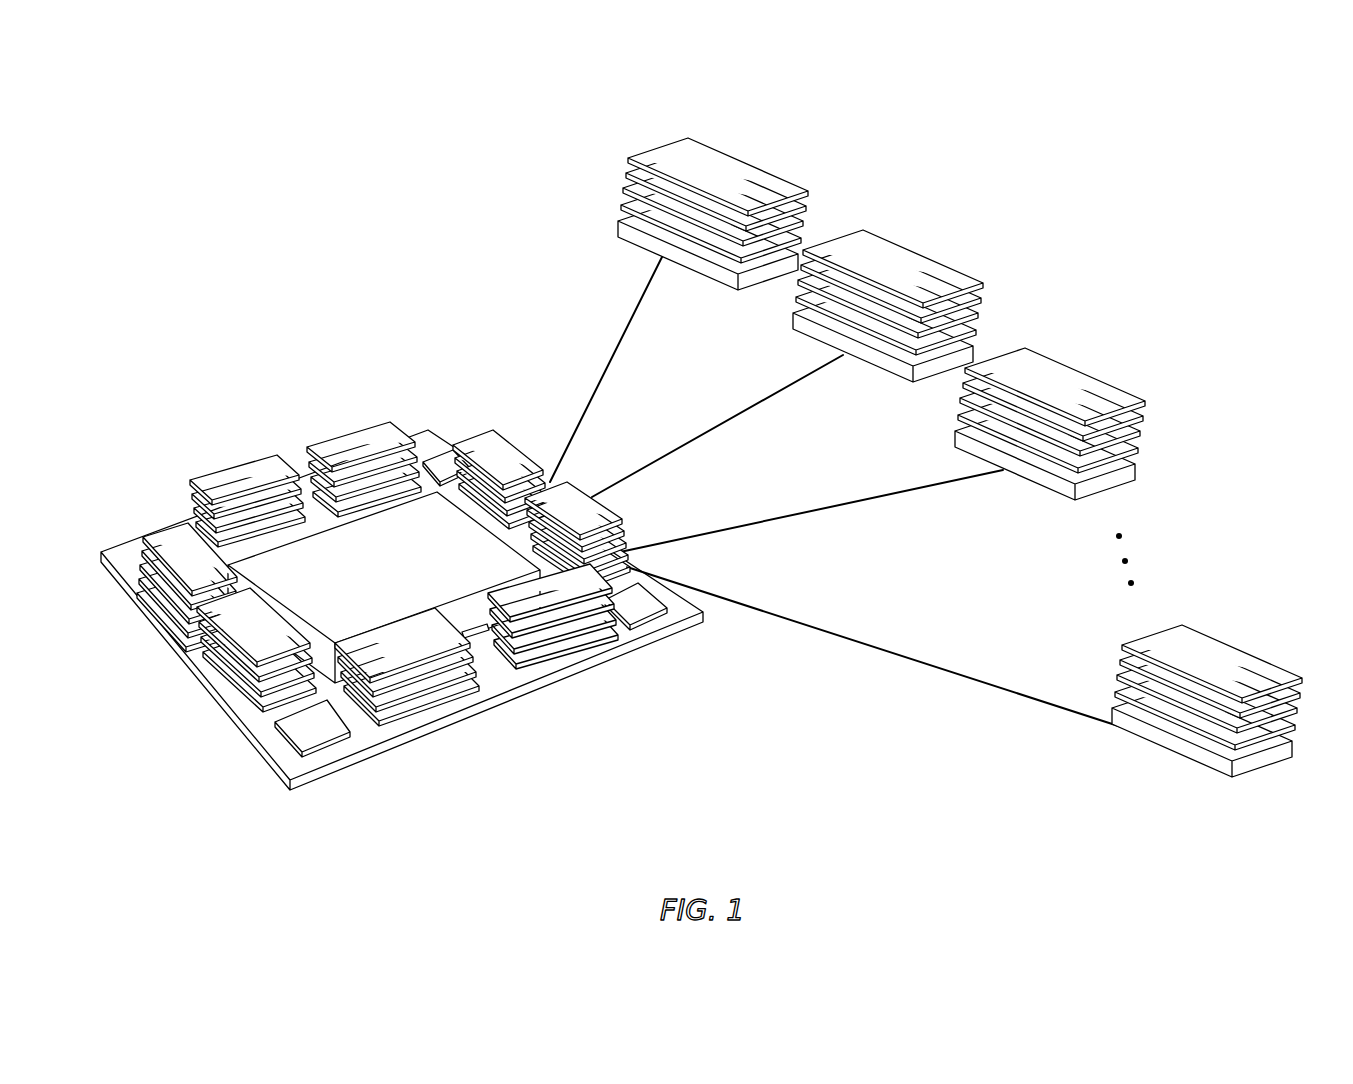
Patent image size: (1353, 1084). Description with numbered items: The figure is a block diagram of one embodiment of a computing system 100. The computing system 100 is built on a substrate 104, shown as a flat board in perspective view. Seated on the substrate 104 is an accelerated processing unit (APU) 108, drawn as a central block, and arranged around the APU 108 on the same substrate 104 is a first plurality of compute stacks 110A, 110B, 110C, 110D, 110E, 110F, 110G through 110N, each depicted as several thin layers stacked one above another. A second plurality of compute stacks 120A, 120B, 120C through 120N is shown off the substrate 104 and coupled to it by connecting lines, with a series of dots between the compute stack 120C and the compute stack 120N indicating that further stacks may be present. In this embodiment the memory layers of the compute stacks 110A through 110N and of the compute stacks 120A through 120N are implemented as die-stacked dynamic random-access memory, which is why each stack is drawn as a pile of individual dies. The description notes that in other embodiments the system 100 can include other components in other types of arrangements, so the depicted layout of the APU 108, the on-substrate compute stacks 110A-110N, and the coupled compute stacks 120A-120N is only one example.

The computing system 100 is at (709, 439).
The substrate 104 is at (492, 720).
The accelerated processing unit (APU) 108 is at (405, 578).
The compute stack 110A is at (245, 470).
The compute stack 110B is at (370, 437).
The compute stack 110C is at (512, 452).
The compute stack 110D is at (580, 515).
The compute stack 110E is at (555, 592).
The compute stack 110F is at (402, 640).
The compute stack 110G is at (238, 628).
The compute stack 110N is at (168, 545).
The compute stack 120A is at (813, 135).
The compute stack 120B is at (990, 219).
The compute stack 120C is at (1173, 342).
The compute stack 120N is at (1318, 616).